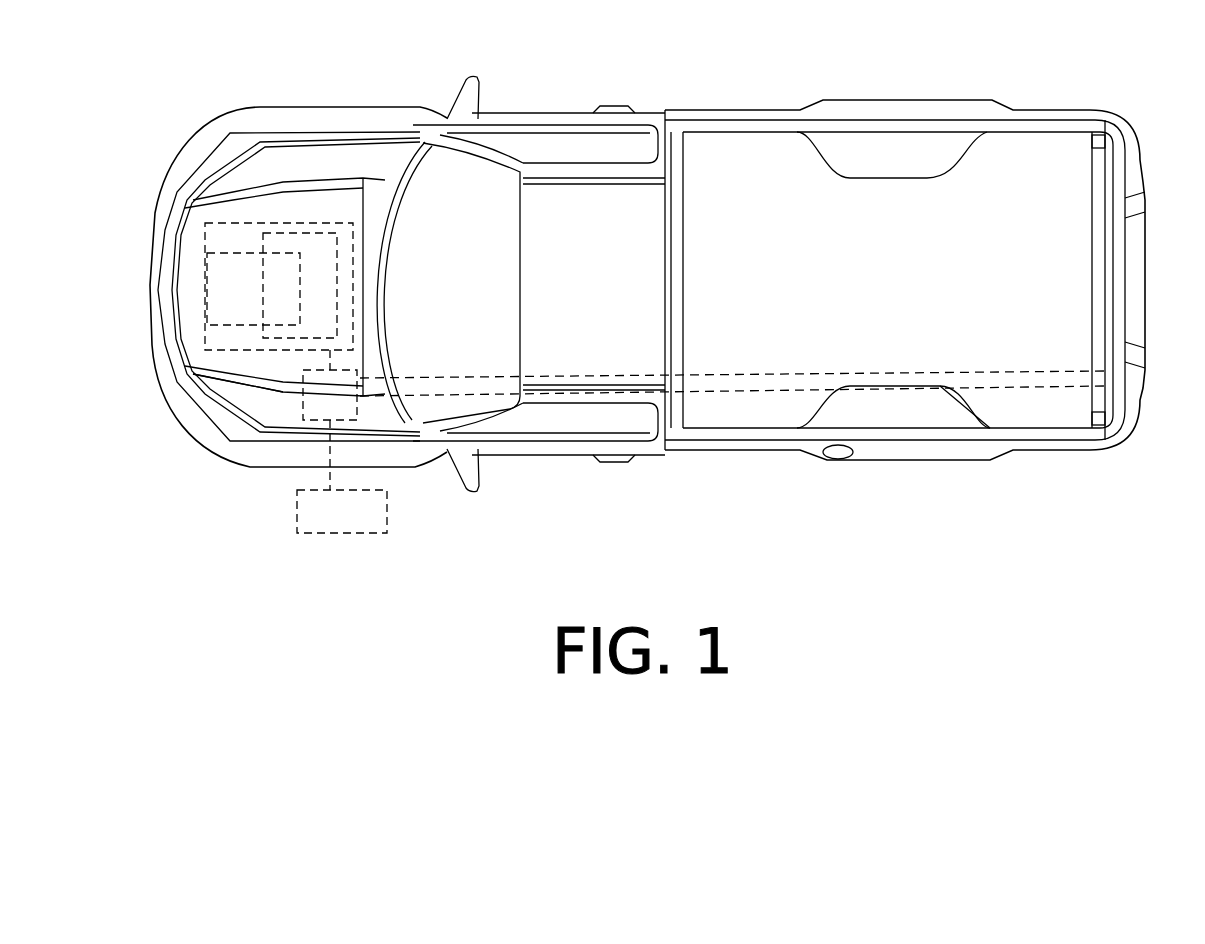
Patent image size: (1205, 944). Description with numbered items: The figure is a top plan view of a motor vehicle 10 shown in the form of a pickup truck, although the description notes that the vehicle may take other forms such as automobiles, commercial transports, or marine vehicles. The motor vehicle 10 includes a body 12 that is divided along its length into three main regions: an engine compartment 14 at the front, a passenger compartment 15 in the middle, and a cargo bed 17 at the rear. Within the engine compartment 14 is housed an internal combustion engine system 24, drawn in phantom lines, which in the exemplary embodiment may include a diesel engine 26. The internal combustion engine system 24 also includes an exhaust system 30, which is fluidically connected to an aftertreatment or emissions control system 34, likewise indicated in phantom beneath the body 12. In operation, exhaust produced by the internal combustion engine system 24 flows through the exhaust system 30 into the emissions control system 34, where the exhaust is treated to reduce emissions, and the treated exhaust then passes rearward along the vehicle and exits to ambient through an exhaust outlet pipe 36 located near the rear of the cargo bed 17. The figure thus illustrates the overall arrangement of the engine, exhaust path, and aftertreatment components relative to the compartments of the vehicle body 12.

The motor vehicle 10 is at (918, 506).
The body 12 is at (718, 460).
The engine compartment 14 is at (304, 172).
The passenger compartment 15 is at (468, 194).
The cargo bed 17 is at (764, 176).
The internal combustion engine system 24 is at (245, 292).
The diesel engine 26 is at (233, 240).
The exhaust system 30 is at (242, 364).
The emissions control system 34 is at (297, 406).
The exhaust outlet pipe 36 is at (1022, 400).